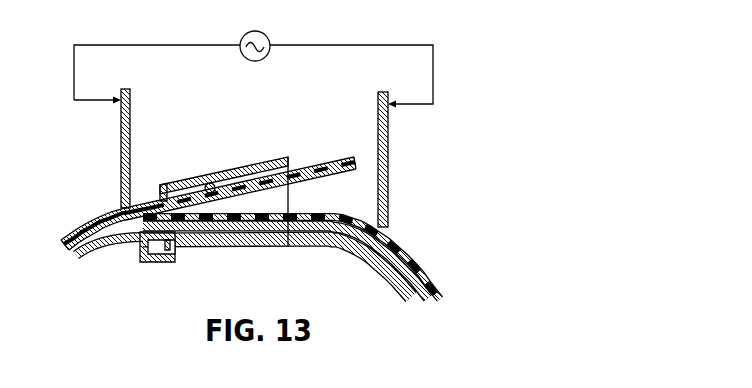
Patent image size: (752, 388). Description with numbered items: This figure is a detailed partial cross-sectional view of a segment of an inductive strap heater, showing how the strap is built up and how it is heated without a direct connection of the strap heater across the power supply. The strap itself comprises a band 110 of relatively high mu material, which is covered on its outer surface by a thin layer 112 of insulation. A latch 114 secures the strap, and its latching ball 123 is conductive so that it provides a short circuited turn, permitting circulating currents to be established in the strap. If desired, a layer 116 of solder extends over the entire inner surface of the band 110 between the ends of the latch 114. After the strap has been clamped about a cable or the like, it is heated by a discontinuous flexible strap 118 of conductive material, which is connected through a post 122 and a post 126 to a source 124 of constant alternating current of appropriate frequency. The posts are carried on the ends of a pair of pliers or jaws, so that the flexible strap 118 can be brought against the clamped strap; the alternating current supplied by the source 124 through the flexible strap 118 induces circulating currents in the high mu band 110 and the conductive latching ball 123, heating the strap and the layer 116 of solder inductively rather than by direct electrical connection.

The band 110 is at (74, 255).
The thin layer of insulation 112 is at (70, 248).
The latch 114 is at (270, 160).
The layer of solder 116 is at (86, 259).
The discontinuous flexible strap 118 is at (88, 221).
The post 122 is at (121, 113).
The latching ball 123 is at (210, 182).
The source of constant alternating current 124 is at (266, 36).
The post 126 is at (389, 134).